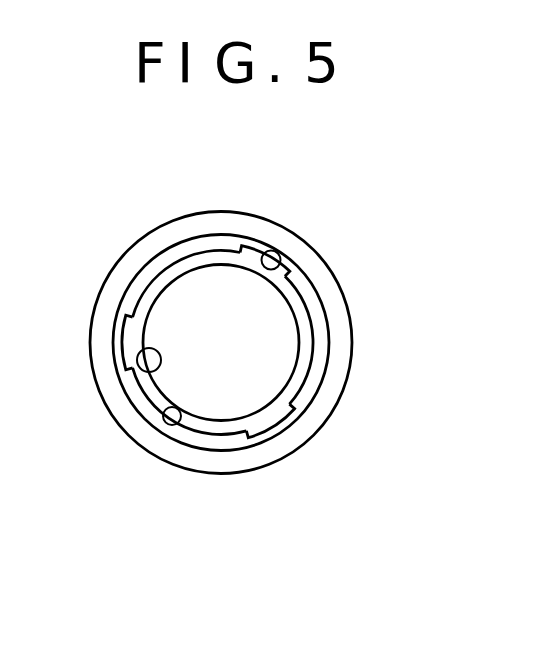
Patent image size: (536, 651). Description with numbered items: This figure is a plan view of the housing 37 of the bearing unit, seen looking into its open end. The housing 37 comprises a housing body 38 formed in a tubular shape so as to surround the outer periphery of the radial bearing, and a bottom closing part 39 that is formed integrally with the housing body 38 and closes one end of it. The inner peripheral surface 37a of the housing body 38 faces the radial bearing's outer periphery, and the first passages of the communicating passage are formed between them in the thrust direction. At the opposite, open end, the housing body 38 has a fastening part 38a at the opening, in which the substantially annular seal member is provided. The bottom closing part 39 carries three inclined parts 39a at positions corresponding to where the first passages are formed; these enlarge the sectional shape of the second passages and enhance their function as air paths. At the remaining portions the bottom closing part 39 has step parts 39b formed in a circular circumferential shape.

The housing 37 is at (241, 334).
The inner peripheral surface 37a is at (264, 257).
The housing body 38 is at (262, 343).
The fastening part 38a is at (318, 325).
The bottom closing part 39 is at (184, 334).
The inclined parts 39a is at (155, 372).
The step parts 39b is at (145, 300).